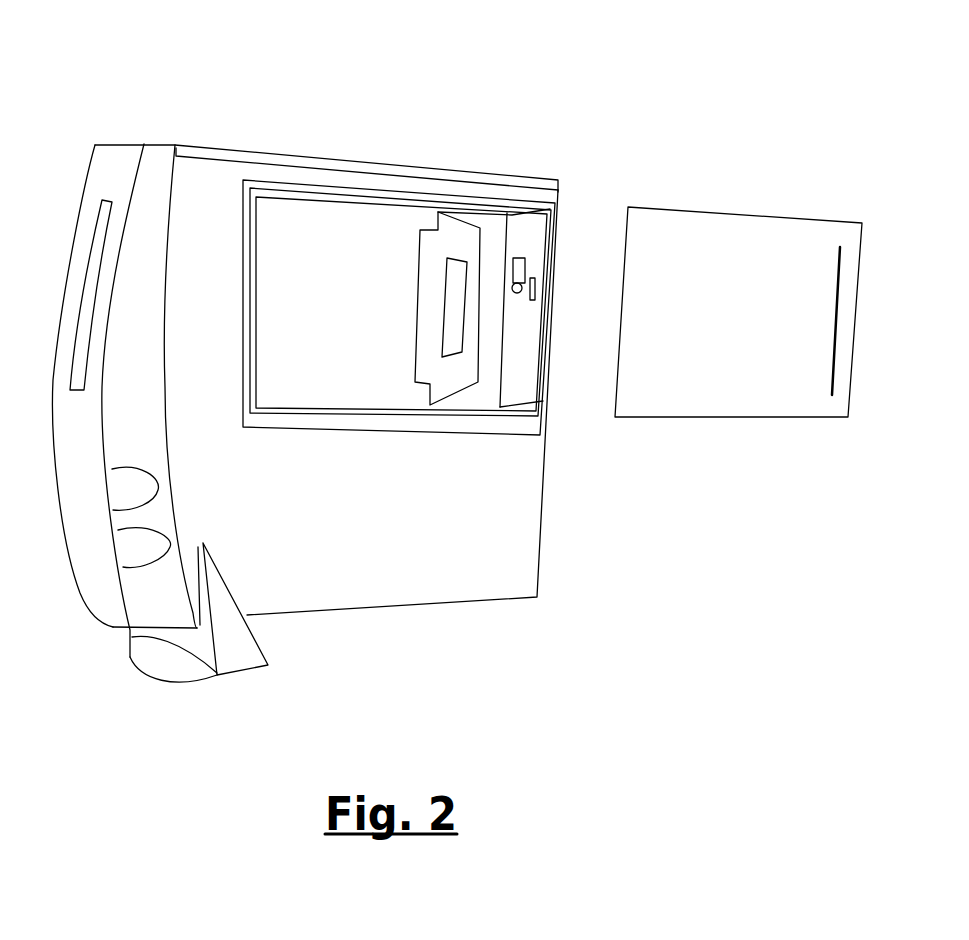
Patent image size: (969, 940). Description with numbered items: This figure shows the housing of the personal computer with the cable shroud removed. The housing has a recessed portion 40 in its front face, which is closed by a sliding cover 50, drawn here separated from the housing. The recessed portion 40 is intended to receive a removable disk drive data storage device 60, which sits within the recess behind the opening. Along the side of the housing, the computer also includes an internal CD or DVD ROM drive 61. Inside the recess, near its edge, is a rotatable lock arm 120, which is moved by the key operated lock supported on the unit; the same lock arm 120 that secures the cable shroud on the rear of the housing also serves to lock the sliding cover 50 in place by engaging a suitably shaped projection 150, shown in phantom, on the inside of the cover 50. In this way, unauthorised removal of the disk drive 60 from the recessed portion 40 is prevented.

The recessed portion 40 is at (520, 400).
The sliding cover 50 is at (757, 230).
The removable disk drive data storage device 60 is at (355, 253).
The internal CD or DVD ROM drive 61 is at (92, 215).
The rotatable lock arm 120 is at (522, 260).
The projection 150 is at (828, 312).